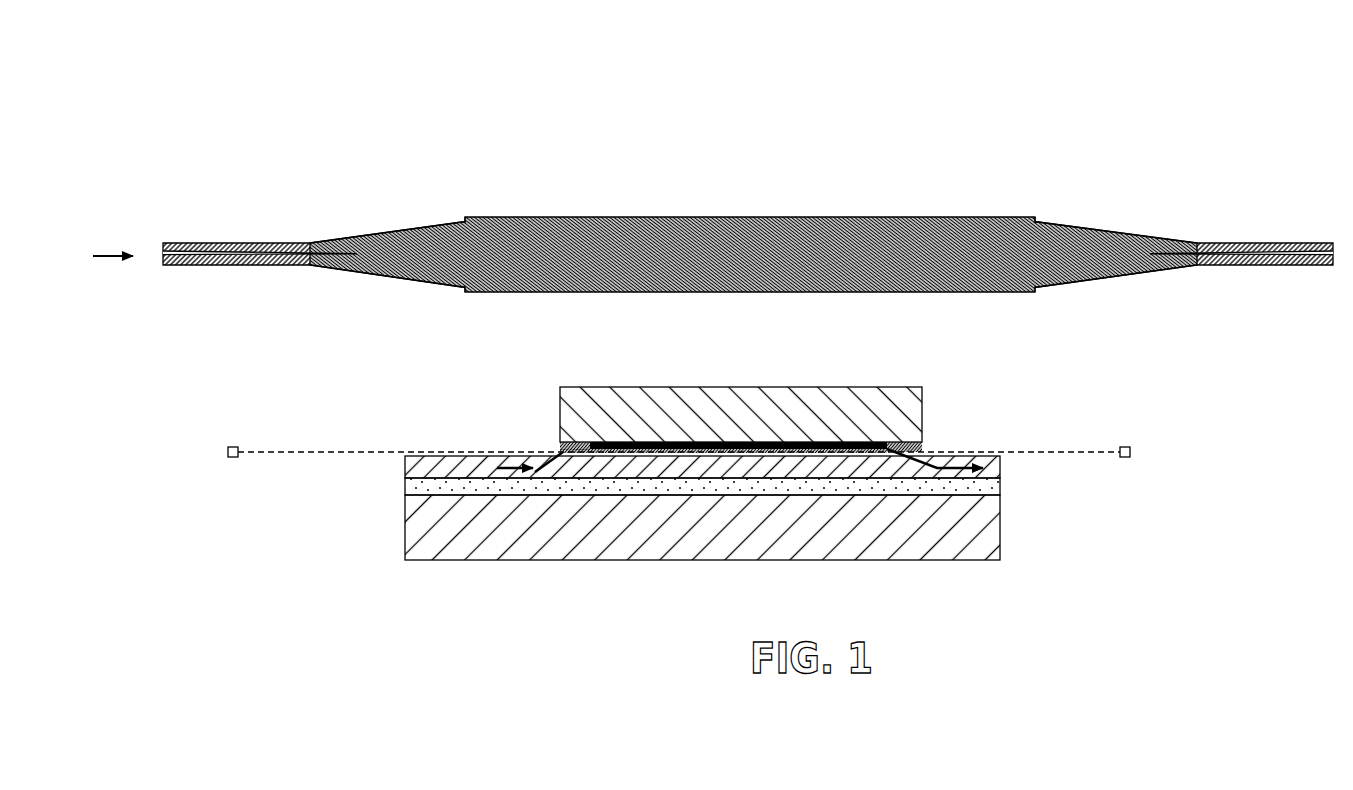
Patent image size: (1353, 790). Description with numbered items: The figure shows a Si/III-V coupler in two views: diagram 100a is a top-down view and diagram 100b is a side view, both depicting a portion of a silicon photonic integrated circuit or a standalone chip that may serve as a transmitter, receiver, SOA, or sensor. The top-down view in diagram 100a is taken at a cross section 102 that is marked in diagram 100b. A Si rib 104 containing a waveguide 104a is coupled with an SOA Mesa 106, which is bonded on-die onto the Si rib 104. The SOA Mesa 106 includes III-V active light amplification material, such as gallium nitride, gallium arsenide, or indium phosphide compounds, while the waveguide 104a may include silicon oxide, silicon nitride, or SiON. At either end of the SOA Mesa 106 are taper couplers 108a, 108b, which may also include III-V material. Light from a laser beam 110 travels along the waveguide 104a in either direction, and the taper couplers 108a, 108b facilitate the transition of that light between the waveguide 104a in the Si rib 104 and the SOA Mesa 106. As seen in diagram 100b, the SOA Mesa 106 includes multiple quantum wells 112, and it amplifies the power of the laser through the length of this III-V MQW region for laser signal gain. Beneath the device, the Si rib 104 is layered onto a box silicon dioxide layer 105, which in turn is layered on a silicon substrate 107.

The diagram (top-down view) 100a is at (1188, 94).
The diagram (side view) 100b is at (1156, 373).
The cross section 102 is at (1150, 454).
The Si rib 104 is at (215, 243).
The waveguide 104a is at (165, 253).
The box silicon dioxide layer 105 is at (405, 487).
The SOA Mesa 106 is at (910, 218).
The silicon substrate 107 is at (987, 518).
The taper coupler 108a is at (312, 249).
The taper coupler 108b is at (1193, 245).
The laser beam 110 is at (110, 250).
The multiple quantum wells 112 is at (680, 393).